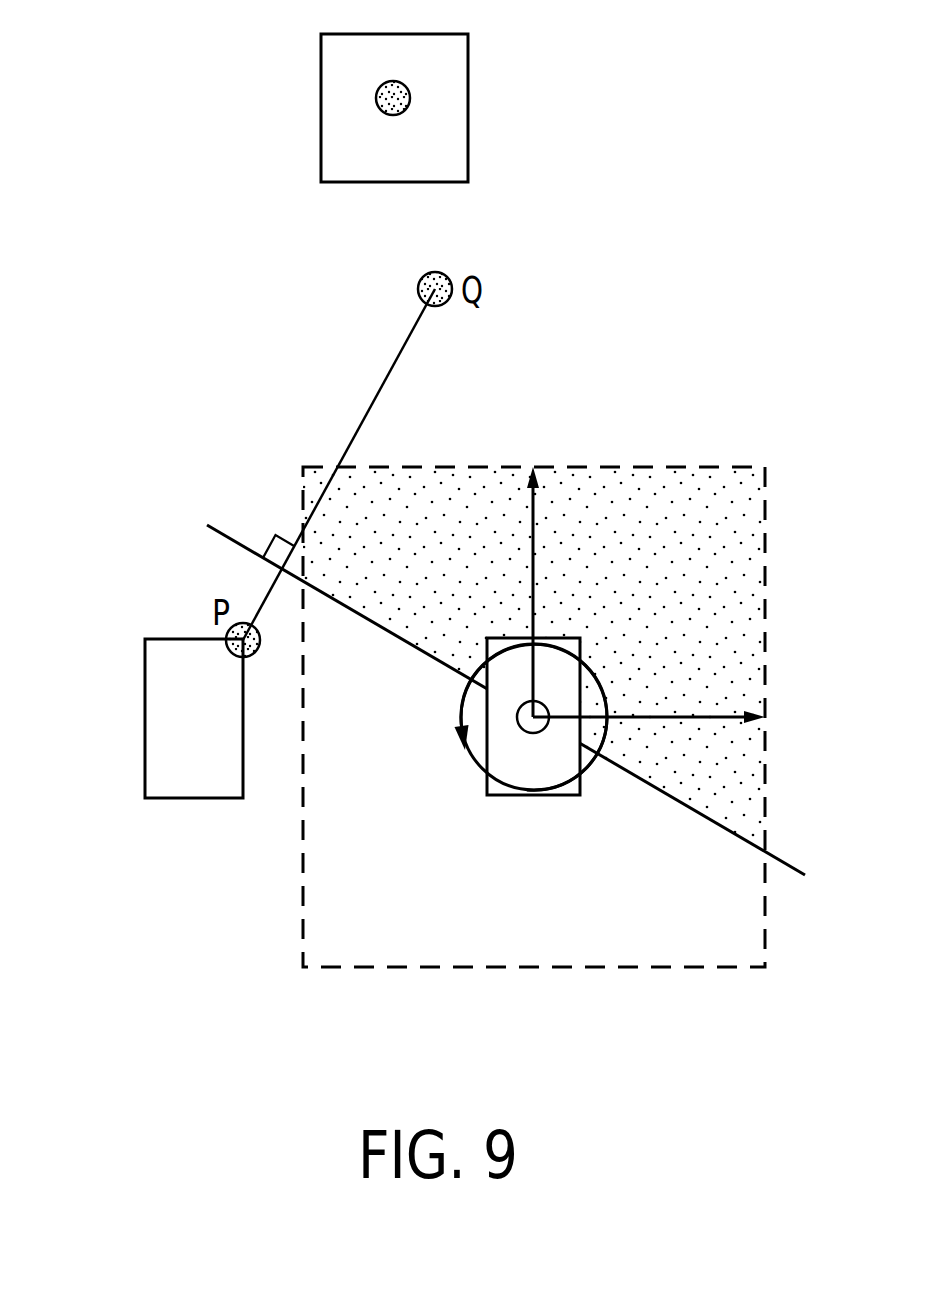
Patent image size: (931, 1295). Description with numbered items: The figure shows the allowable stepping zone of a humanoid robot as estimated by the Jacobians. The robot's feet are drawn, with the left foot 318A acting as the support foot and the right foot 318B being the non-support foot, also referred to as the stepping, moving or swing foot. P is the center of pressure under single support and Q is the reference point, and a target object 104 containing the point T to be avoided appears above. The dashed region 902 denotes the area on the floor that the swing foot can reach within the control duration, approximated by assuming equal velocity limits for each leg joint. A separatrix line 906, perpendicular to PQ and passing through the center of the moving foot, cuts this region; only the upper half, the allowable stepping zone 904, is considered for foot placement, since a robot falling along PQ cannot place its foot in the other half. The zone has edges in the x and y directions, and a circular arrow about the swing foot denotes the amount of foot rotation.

The target object 104 is at (320, 103).
The left foot 318A is at (143, 719).
The right foot 318B is at (487, 770).
The region 902 is at (537, 968).
The allowable stepping zone 904 is at (737, 540).
The separatrix line 906 is at (785, 862).